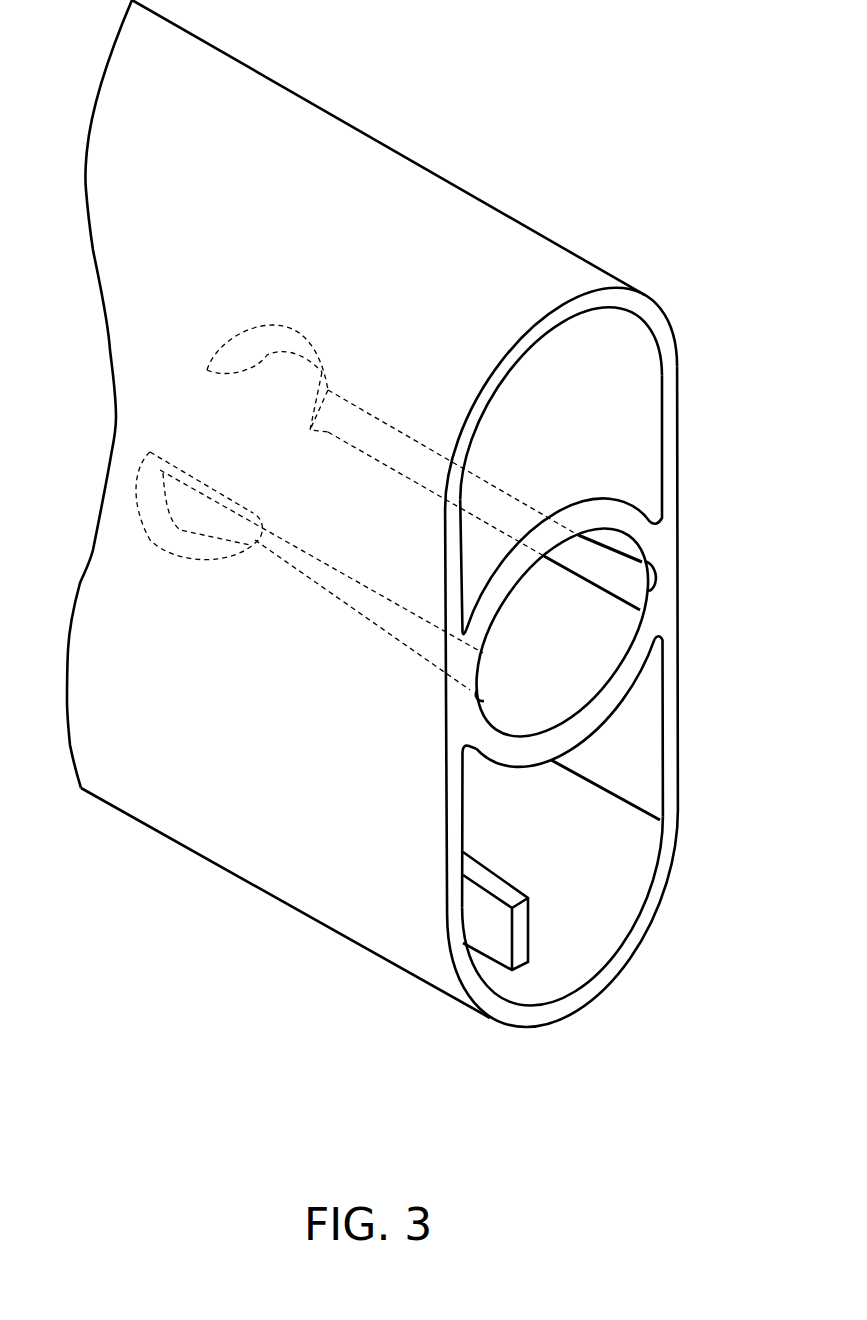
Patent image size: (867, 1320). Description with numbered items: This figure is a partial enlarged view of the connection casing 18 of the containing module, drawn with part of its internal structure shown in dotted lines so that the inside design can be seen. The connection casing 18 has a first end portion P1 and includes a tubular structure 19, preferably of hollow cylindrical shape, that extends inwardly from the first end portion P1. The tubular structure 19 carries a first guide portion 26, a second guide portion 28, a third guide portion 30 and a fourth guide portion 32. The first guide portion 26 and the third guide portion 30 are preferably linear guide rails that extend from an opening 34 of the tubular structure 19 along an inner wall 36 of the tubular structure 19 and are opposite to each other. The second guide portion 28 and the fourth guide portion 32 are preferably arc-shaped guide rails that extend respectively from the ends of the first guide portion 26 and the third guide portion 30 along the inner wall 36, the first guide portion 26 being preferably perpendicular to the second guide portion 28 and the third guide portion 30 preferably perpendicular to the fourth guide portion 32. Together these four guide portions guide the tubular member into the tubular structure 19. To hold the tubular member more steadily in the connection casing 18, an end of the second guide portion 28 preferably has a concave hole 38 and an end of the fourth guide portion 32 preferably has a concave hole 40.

The connection casing 18 is at (548, 190).
The tubular structure 19 is at (542, 765).
The first guide portion 26 is at (467, 680).
The second guide portion 28 is at (173, 557).
The third guide portion 30 is at (633, 588).
The fourth guide portion 32 is at (300, 343).
The opening 34 is at (610, 687).
The inner wall 36 is at (563, 687).
The concave hole 38 is at (265, 543).
The concave hole 40 is at (225, 338).
The first end portion P1 is at (583, 283).